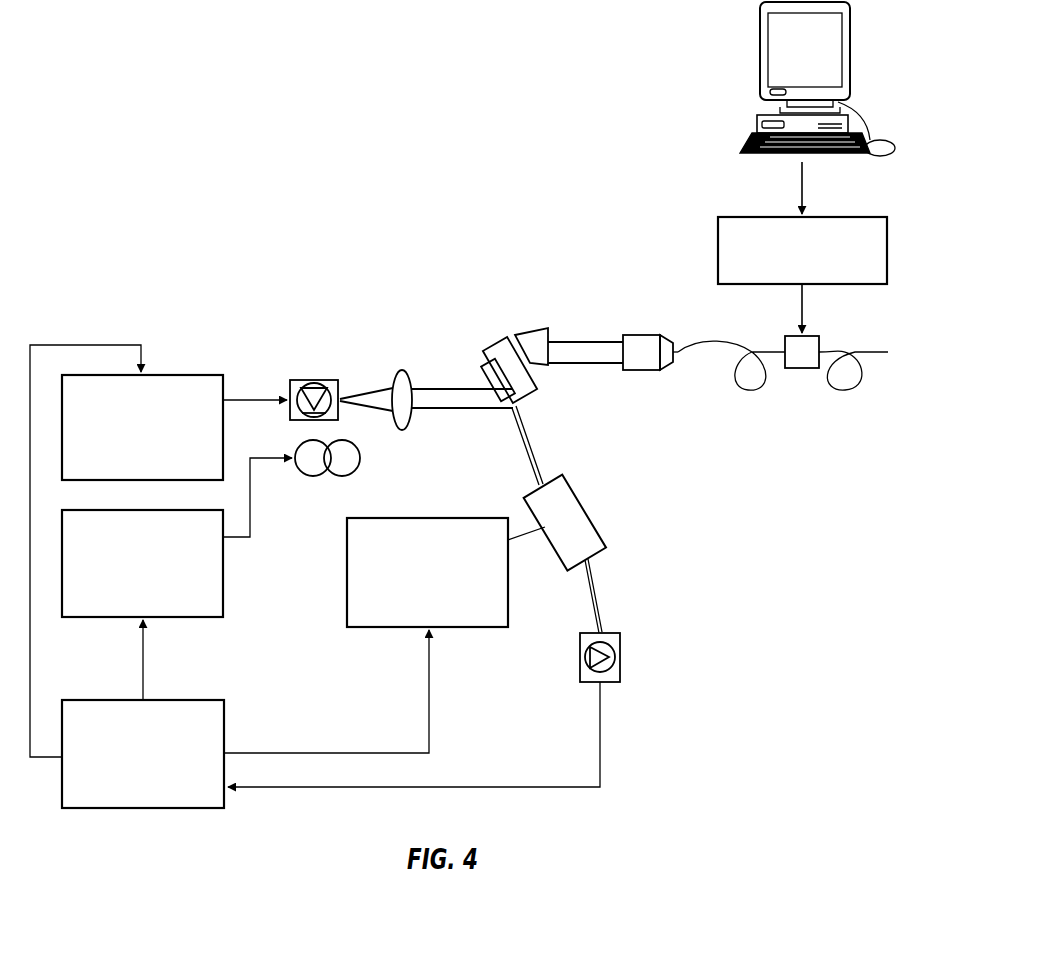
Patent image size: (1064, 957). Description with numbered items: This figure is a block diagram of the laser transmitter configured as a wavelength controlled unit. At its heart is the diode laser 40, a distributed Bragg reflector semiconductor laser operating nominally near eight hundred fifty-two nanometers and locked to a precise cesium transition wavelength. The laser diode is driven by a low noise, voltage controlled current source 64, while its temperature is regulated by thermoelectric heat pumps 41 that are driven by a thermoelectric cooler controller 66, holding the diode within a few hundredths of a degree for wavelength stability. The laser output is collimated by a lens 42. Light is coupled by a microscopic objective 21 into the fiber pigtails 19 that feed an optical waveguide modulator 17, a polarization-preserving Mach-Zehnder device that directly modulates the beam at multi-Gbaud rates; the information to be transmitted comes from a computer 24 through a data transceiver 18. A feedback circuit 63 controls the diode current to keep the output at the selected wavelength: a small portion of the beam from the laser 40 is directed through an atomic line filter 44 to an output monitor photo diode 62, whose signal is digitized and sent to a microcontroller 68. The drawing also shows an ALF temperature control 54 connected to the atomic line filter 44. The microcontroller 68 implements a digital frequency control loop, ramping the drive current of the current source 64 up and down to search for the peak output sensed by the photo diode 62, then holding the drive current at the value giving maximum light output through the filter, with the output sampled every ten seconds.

The optical waveguide modulator 17 is at (819, 337).
The data transceiver 18 is at (718, 250).
The fiber pigtails 19 is at (742, 392).
The microscopic objective 21 is at (636, 335).
The computer 24 is at (758, 42).
The diode laser 40 is at (318, 380).
The thermoelectric heat pumps 41 is at (358, 466).
The lens 42 is at (408, 372).
The atomic line filter 44 is at (580, 505).
The ALF temperature control 54 is at (465, 627).
The output monitor photo diode 62 is at (620, 655).
The feedback circuit 63 is at (678, 713).
The voltage controlled current source 64 is at (180, 375).
The thermoelectric cooler controller 66 is at (223, 555).
The microcontroller 68 is at (195, 700).